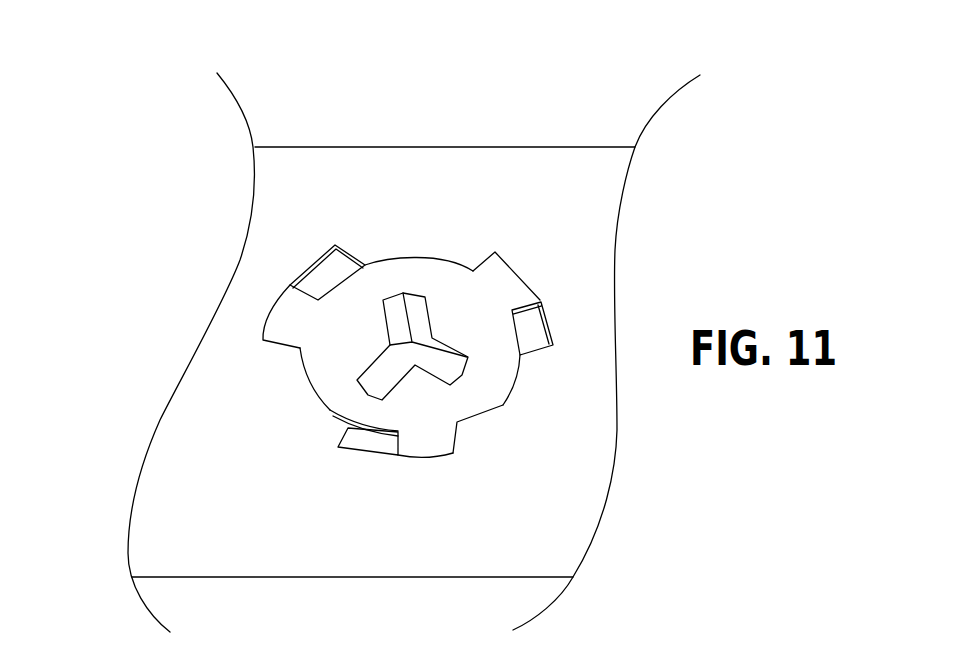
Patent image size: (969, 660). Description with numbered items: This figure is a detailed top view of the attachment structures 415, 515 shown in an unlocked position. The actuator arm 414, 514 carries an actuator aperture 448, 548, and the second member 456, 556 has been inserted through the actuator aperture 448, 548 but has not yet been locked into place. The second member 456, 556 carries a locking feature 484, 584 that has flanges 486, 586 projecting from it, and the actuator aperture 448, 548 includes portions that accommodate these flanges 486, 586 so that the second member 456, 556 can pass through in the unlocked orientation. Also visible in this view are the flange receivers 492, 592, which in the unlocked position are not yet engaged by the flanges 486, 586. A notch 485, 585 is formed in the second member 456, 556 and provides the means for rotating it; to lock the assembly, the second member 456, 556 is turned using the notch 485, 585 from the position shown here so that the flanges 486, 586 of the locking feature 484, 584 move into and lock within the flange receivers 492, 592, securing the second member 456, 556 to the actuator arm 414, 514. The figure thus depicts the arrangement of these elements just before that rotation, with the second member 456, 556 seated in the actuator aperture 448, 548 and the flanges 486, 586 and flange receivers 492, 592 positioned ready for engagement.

The actuator arm 414 is at (382, 183).
The actuator arm 514 is at (414, 332).
The attachment structure 415 is at (693, 240).
The attachment structure 515 is at (462, 331).
The actuator aperture 448 is at (333, 413).
The actuator aperture 548 is at (312, 468).
The second member 456 is at (456, 261).
The second member 556 is at (422, 278).
The locking feature 484 is at (282, 293).
The locking feature 584 is at (326, 339).
The notch 485 is at (467, 360).
The notch 585 is at (468, 388).
The flange 486 is at (508, 285).
The flange 586 is at (355, 378).
The flange receiver 492 is at (338, 267).
The flange receiver 592 is at (457, 366).